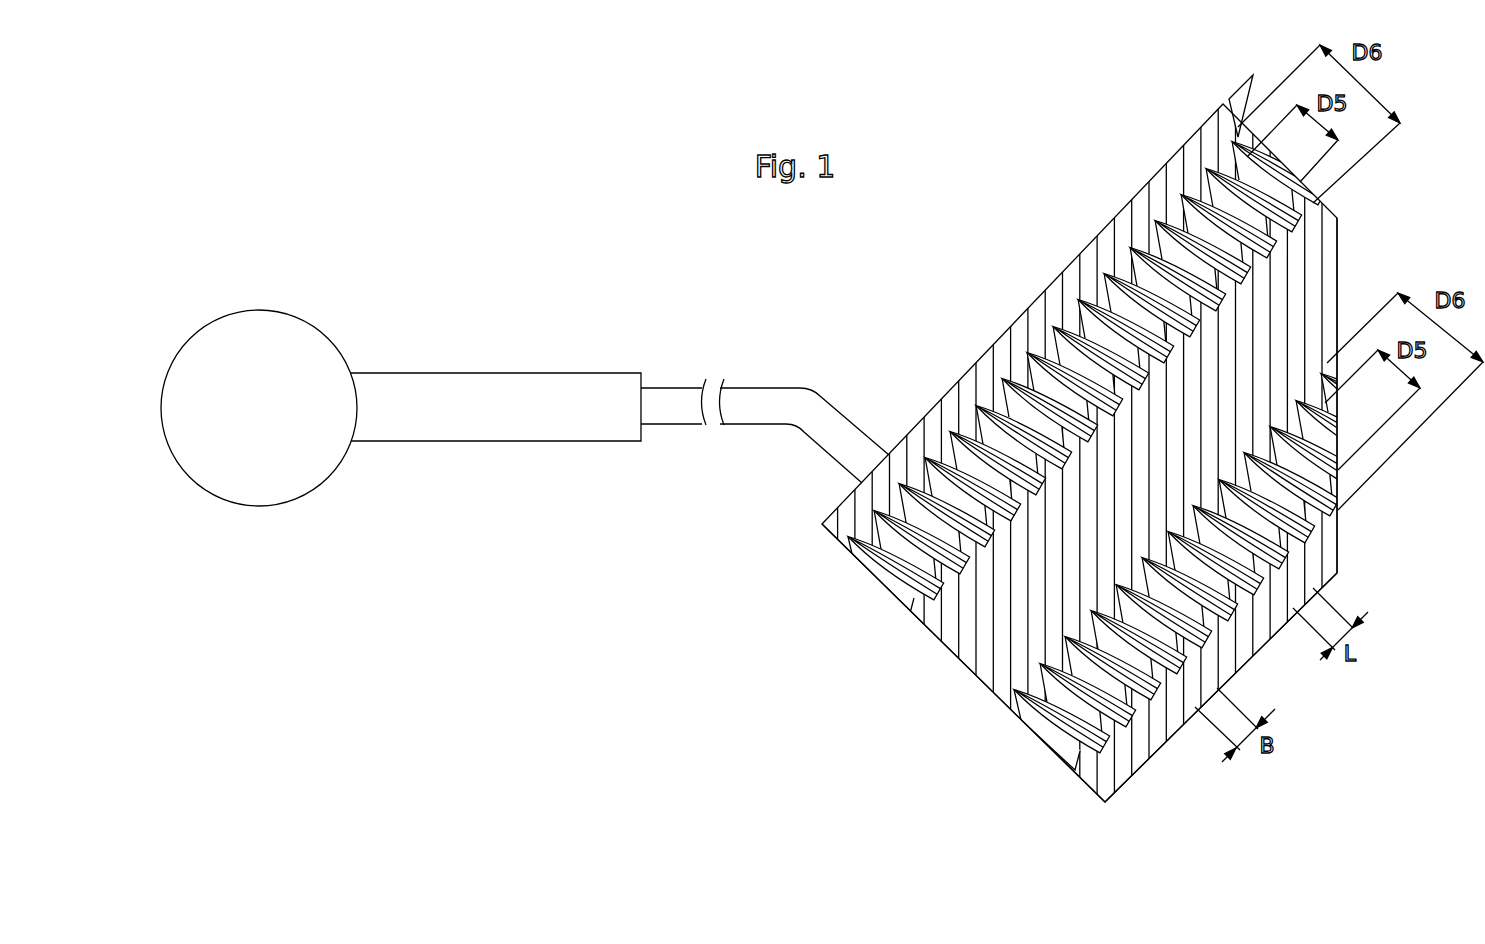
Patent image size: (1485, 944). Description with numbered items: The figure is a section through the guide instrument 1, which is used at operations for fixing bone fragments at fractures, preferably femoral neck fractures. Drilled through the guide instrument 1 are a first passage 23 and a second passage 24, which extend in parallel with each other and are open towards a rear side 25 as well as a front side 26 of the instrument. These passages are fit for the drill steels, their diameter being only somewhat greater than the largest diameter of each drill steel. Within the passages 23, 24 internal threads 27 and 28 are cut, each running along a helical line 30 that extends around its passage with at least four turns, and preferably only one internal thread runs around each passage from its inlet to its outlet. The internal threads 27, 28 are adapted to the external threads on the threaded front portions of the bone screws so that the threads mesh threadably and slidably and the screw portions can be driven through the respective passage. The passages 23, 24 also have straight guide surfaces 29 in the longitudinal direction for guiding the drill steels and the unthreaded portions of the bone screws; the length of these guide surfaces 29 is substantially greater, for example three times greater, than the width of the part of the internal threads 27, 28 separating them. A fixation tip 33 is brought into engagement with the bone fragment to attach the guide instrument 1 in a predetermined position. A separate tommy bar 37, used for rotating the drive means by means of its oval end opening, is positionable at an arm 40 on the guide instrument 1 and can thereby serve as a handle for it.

The guide instrument 1 is at (1358, 521).
The first passage 23 is at (1040, 690).
The second passage 24 is at (1085, 376).
The rear side 25 is at (932, 648).
The front side 26 is at (1338, 285).
The internal thread 27 is at (1318, 583).
The internal thread 28 is at (1037, 332).
The guide surfaces 29 is at (1142, 762).
The helical line 30 is at (1000, 373).
The fixation tip 33 is at (1237, 92).
The tommy bar 37 is at (455, 373).
The arm 40 is at (677, 388).